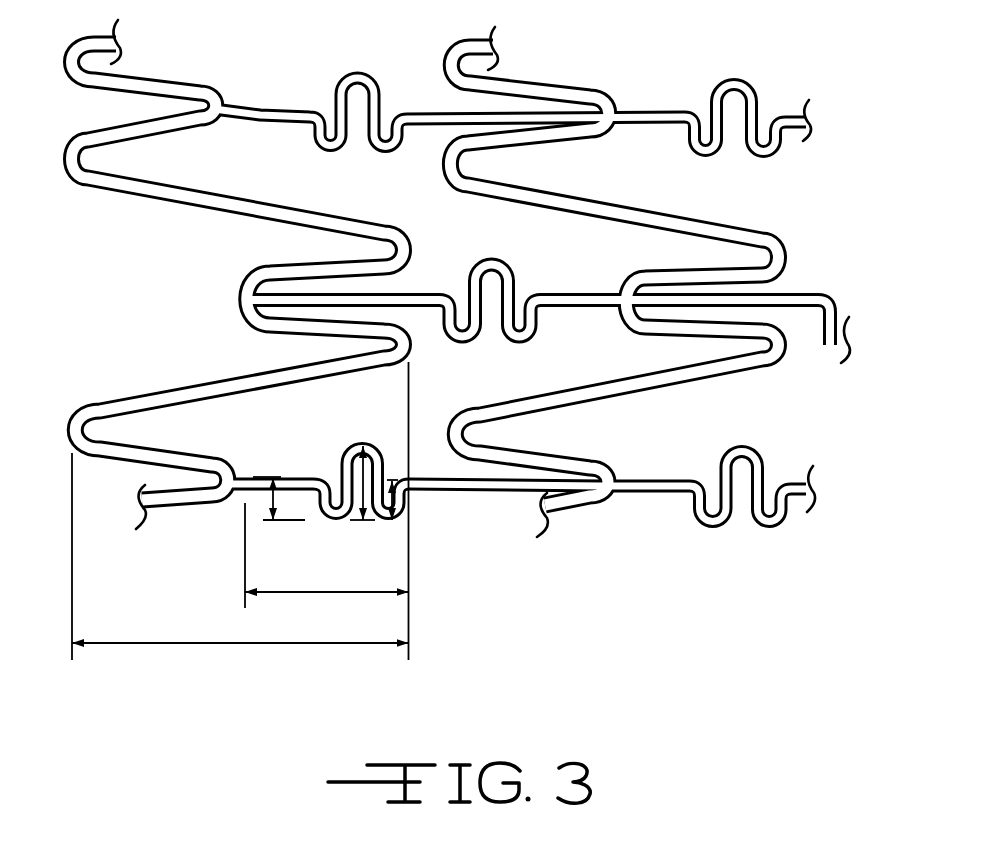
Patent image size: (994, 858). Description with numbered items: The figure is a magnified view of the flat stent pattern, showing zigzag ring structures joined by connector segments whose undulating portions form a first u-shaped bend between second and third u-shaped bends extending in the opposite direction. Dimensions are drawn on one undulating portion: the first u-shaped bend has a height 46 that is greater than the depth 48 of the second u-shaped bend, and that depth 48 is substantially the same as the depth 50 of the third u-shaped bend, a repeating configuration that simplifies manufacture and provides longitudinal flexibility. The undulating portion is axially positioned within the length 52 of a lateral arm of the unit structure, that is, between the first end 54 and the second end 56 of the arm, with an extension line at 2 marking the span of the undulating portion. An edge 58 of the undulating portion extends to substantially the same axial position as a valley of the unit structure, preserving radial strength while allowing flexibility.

The connector length 2 is at (357, 592).
The height 46 is at (343, 470).
The depth 48 is at (250, 478).
The depth 50 is at (414, 488).
The length 52 is at (197, 643).
The first end 54 is at (72, 424).
The second end 56 is at (407, 339).
The edge 58 is at (410, 652).